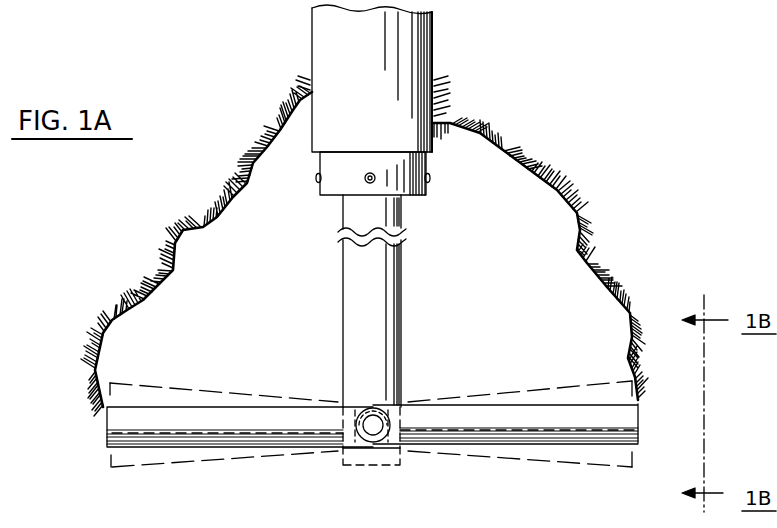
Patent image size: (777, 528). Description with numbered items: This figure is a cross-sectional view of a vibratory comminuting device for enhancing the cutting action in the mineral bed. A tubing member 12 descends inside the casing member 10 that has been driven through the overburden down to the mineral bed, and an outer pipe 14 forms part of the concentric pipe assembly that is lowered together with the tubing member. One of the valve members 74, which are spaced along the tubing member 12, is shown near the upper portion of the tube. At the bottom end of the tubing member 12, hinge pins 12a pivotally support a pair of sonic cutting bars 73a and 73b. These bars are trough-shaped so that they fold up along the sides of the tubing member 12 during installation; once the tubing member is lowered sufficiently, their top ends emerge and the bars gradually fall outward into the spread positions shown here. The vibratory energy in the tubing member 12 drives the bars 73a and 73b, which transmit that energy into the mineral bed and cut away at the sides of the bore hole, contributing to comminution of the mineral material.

The casing member 10 is at (432, 143).
The tubing member 12 is at (392, 283).
The hinge pins 12a is at (377, 415).
The pipe 14 is at (428, 182).
The sonic cutting bar 73a is at (510, 418).
The sonic cutting bar 73b is at (200, 418).
The valve member 74 is at (334, 181).